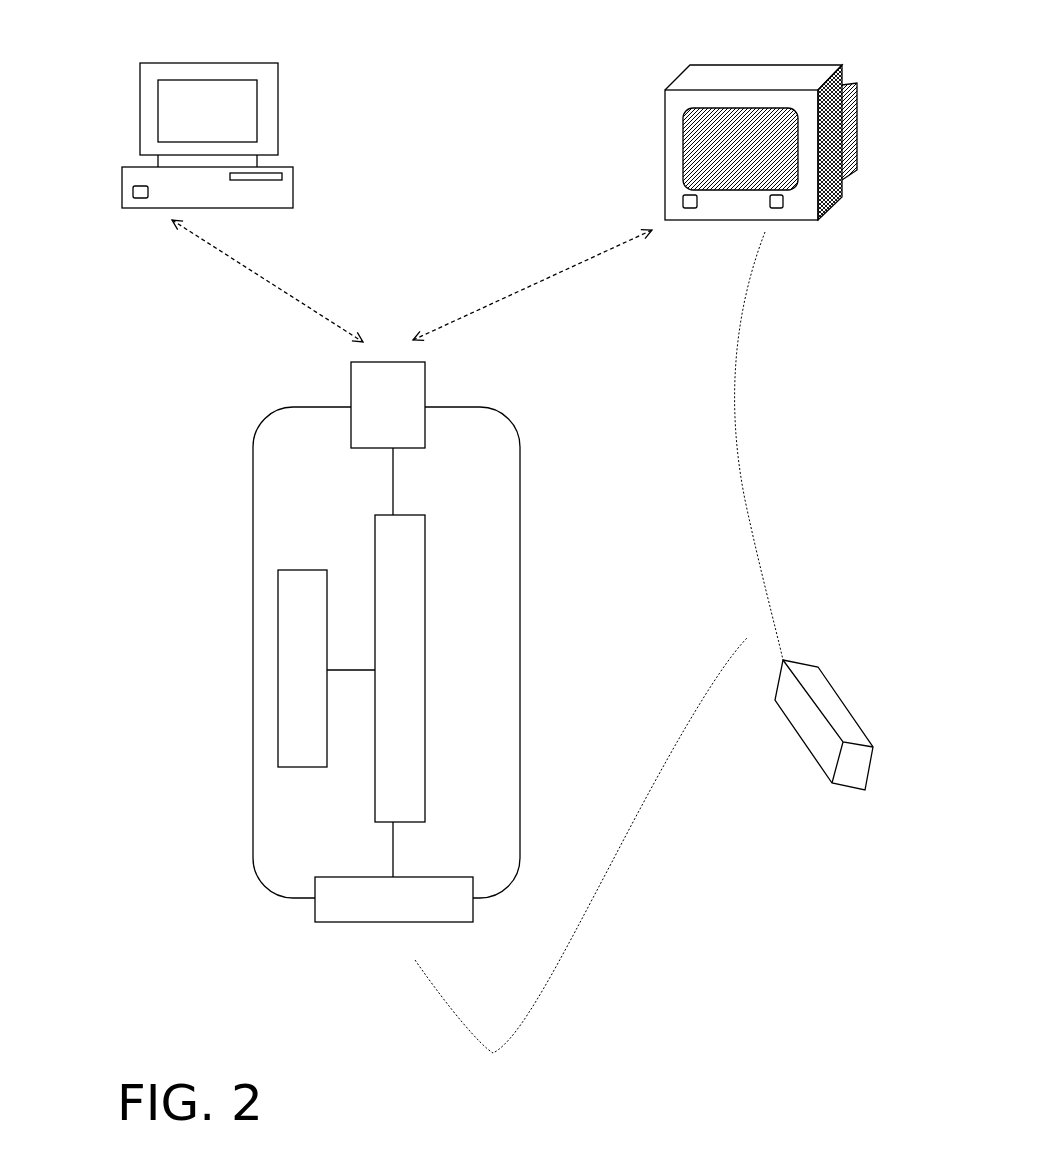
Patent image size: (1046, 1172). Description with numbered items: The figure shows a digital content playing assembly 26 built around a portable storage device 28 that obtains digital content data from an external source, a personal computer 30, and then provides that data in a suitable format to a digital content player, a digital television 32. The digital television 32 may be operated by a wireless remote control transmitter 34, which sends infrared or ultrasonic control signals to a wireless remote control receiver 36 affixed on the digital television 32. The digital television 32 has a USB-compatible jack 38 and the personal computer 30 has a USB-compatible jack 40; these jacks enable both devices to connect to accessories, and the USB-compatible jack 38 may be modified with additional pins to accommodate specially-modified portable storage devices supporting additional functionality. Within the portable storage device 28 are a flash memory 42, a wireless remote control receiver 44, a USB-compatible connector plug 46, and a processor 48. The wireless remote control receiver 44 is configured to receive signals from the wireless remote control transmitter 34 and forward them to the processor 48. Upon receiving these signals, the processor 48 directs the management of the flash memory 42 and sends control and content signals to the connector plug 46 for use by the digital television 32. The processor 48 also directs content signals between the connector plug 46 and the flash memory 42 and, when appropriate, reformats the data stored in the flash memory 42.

The digital content playing assembly 26 is at (445, 132).
The portable storage device 28 is at (312, 465).
The personal computer 30 is at (293, 185).
The digital television 32 is at (665, 155).
The wireless remote control transmitter 34 is at (843, 703).
The wireless remote control receiver 36 is at (777, 210).
The USB-compatible jack 38 is at (683, 202).
The USB-compatible jack 40 is at (133, 192).
The flash memory 42 is at (278, 660).
The wireless remote control receiver 44 is at (409, 913).
The USB-compatible connector plug 46 is at (408, 421).
The processor 48 is at (425, 658).